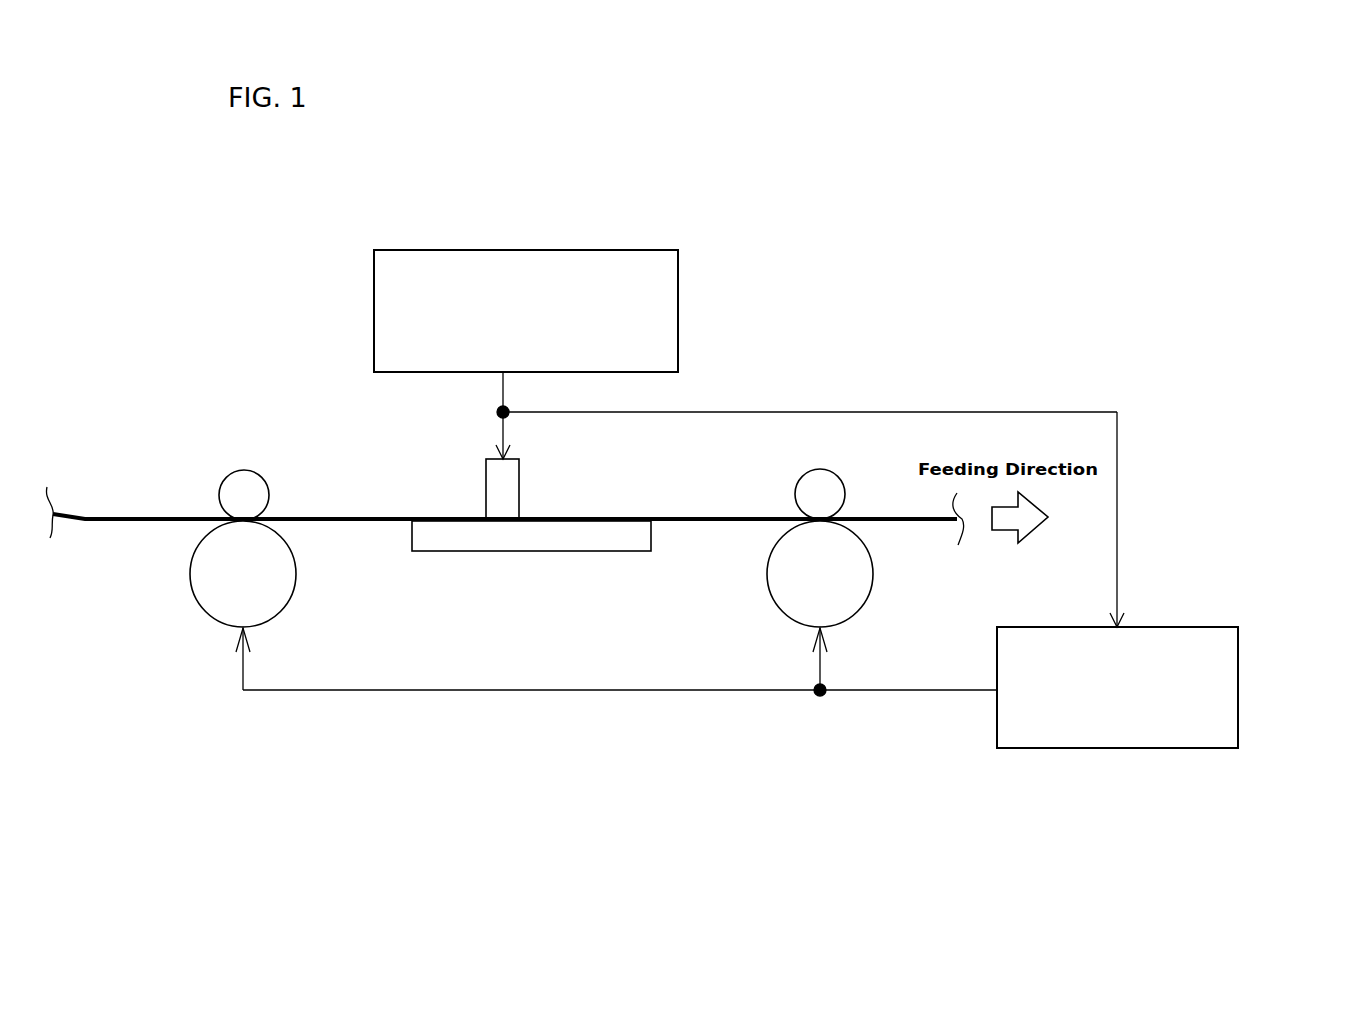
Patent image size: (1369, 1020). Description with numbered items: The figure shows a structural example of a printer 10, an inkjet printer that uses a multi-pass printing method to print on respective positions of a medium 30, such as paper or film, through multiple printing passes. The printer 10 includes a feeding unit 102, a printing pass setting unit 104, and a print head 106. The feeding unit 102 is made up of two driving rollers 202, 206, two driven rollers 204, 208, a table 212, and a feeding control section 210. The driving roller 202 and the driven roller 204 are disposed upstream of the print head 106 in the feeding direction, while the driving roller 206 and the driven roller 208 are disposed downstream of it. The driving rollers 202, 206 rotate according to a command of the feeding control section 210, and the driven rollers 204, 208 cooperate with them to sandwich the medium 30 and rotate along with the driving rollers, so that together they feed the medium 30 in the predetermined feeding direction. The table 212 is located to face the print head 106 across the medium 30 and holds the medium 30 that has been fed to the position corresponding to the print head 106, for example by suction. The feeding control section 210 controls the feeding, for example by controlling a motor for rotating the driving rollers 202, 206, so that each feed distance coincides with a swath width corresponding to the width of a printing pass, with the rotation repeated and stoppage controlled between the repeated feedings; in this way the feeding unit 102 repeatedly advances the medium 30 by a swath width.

The printer 10 is at (1136, 231).
The medium 30 is at (77, 515).
The feeding unit 102 is at (1288, 442).
The printing pass setting unit 104 is at (602, 250).
The print head 106 is at (486, 480).
The driving roller 202 is at (203, 615).
The driven roller 204 is at (243, 470).
The driving roller 206 is at (873, 573).
The driven roller 208 is at (845, 485).
The feeding control section 210 is at (1087, 748).
The table 212 is at (508, 551).